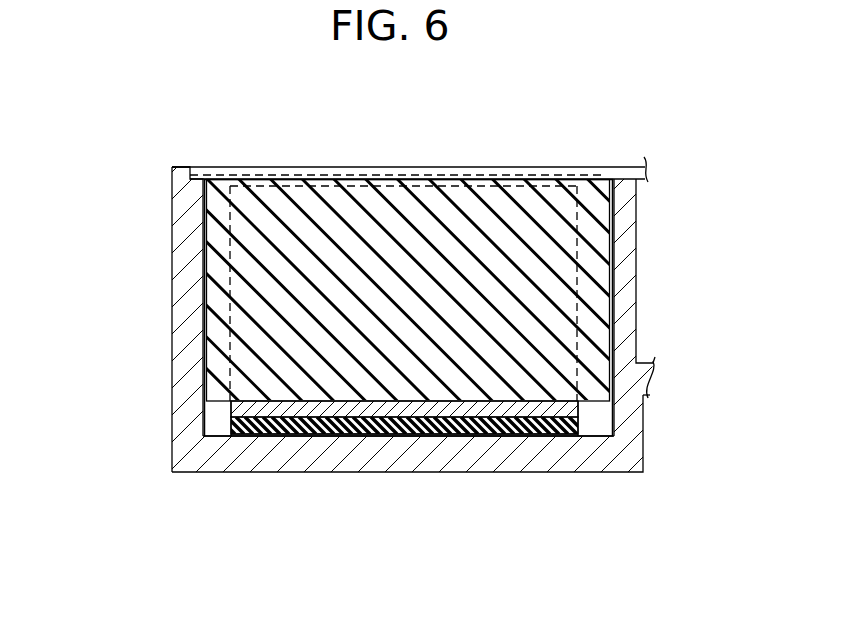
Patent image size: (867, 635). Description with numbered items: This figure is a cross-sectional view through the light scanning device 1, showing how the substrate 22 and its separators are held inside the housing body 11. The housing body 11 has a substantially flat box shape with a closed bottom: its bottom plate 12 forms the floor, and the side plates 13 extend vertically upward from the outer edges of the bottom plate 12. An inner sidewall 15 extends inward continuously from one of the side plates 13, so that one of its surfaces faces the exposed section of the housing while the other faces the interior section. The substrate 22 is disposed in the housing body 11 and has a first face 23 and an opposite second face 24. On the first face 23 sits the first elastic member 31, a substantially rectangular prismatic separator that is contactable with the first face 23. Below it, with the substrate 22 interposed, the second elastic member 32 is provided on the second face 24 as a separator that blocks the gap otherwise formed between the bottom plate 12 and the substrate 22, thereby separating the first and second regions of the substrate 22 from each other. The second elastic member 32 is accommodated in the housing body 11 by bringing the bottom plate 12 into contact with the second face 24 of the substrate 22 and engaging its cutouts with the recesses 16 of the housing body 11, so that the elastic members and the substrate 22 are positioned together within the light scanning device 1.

The light scanning device 1 is at (182, 165).
The housing body 11 is at (584, 166).
The bottom plate 12 is at (357, 462).
The side plates 13 is at (185, 240).
The inner sidewall 15 is at (627, 232).
The recesses 16 is at (210, 415).
The substrate 22 is at (490, 407).
The first face 23 is at (553, 398).
The second face 24 is at (540, 432).
The first elastic member 31 is at (427, 200).
The second elastic member 32 is at (270, 430).